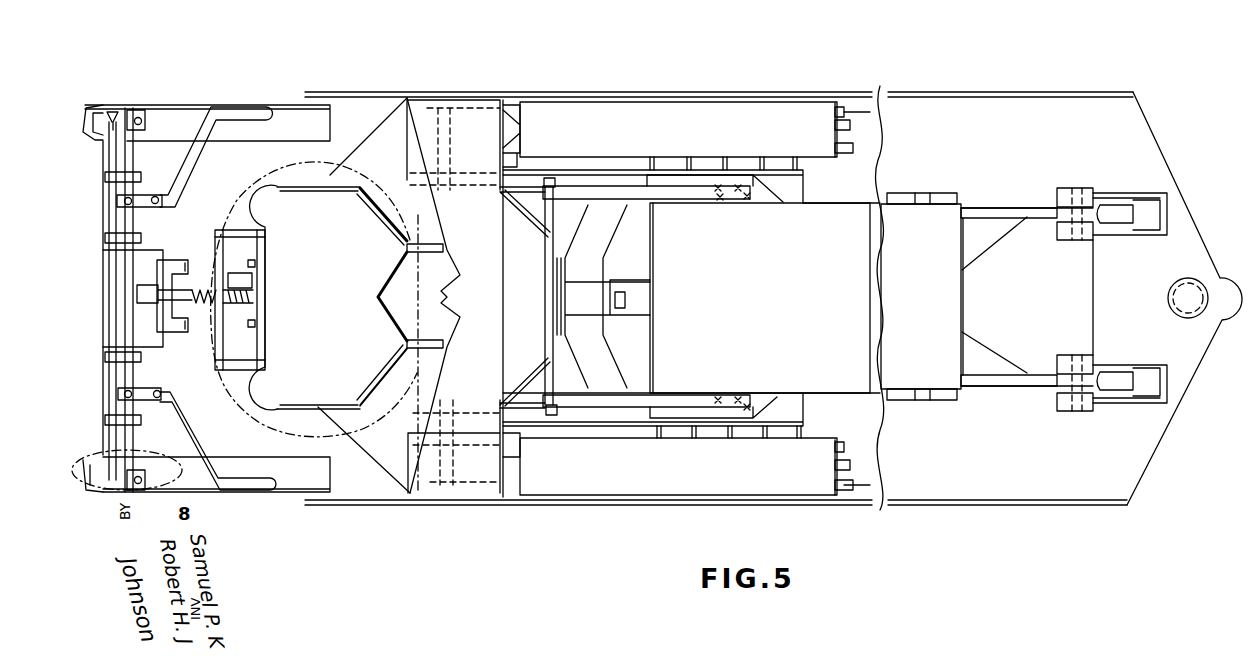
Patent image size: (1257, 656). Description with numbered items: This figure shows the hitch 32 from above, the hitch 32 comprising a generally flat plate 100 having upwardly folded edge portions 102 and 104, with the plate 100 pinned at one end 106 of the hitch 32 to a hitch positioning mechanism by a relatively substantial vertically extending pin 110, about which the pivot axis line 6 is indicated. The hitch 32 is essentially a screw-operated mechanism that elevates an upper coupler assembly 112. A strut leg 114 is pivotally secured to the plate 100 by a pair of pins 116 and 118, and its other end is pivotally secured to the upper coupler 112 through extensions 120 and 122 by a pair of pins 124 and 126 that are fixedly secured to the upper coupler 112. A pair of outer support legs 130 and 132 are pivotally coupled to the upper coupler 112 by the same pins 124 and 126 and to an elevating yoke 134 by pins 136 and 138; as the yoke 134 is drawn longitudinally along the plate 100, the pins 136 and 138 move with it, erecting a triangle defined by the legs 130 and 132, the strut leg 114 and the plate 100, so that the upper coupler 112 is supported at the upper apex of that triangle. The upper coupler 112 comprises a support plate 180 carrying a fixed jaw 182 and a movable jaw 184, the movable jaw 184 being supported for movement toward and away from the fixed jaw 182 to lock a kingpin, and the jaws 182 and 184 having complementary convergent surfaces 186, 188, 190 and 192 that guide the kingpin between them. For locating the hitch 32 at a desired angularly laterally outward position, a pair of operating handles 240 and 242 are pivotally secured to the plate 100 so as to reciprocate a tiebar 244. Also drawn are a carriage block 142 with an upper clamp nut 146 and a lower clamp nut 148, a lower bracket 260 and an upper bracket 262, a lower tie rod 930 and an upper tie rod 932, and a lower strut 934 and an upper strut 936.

The pivot axis line 6 is at (343, 440).
The hitch 32 is at (951, 504).
The flat plate 100 is at (1130, 130).
The upwardly folded edge portion 102 is at (986, 92).
The upwardly folded edge portion 104 is at (970, 503).
The end of hitch 106 is at (1180, 250).
The vertically extending pin 110 is at (1168, 296).
The upper coupler assembly 112 is at (355, 144).
The strut leg 114 is at (984, 206).
The pin 116 is at (1047, 232).
The pin 118 is at (1052, 363).
The extension 120 is at (565, 172).
The extension 122 is at (587, 447).
The pin 124 is at (413, 122).
The pin 126 is at (458, 498).
The outer support leg 130 is at (693, 100).
The outer support leg 132 is at (705, 496).
The elevating yoke 134 is at (622, 238).
The pin 136 is at (204, 309).
The pin 138 is at (137, 293).
The carriage block 142 is at (983, 342).
The upper clamp nut 146 is at (1027, 207).
The lower clamp nut 148 is at (1043, 390).
The support plate 180 is at (396, 108).
The fixed jaw 182 is at (461, 110).
The movable jaw 184 is at (338, 205).
The convergent surface 186 is at (432, 180).
The convergent surface 188 is at (383, 225).
The convergent surface 190 is at (420, 398).
The convergent surface 192 is at (385, 386).
The operating handle 240 is at (238, 485).
The operating handle 242 is at (201, 154).
The tiebar 244 is at (124, 303).
The lower bracket 260 is at (104, 490).
The upper bracket 262 is at (165, 73).
The lower tie rod 930 is at (633, 393).
The upper tie rod 932 is at (613, 186).
The lower strut 934 is at (545, 375).
The upper strut 936 is at (550, 212).